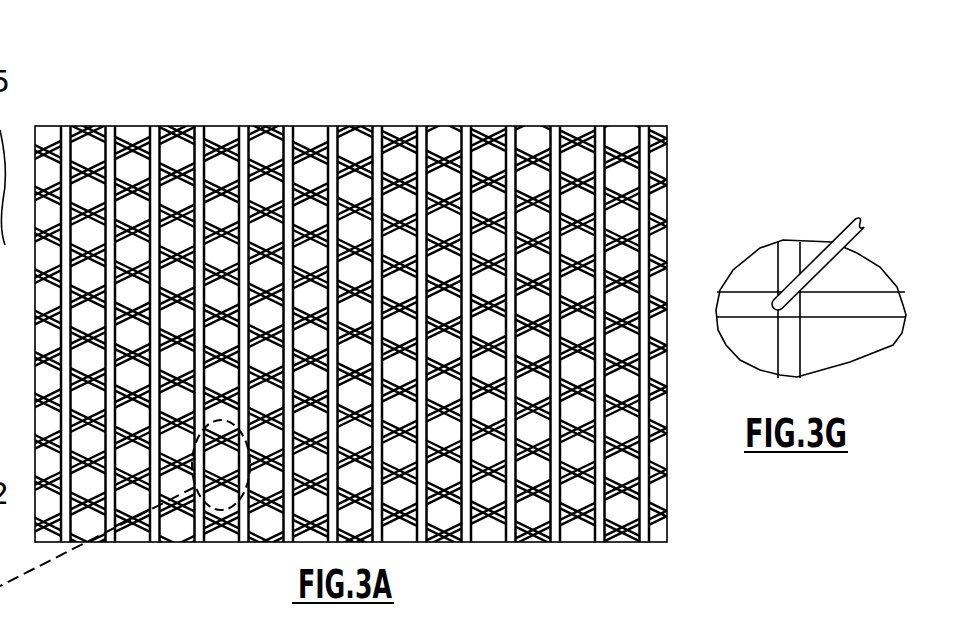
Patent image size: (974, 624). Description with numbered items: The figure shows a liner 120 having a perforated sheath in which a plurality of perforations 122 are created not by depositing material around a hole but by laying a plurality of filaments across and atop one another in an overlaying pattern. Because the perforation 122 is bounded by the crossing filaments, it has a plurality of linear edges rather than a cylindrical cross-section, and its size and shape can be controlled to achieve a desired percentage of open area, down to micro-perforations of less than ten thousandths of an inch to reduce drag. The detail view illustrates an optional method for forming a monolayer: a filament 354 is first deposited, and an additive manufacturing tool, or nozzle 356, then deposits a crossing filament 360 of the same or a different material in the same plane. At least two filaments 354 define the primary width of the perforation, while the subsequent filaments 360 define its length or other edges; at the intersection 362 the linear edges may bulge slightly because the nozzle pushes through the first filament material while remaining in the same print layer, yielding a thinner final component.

In FIG. 3A, the liner 120 is at (355, 314).
In FIG. 3A, the perforation 122 is at (398, 500).
In FIG. 3G, the filament 354 is at (789, 250).
In FIG. 3G, the additive manufacturing tool 356 is at (867, 227).
In FIG. 3G, the crossing filament 360 is at (863, 307).
In FIG. 3G, the intersection 362 is at (792, 313).